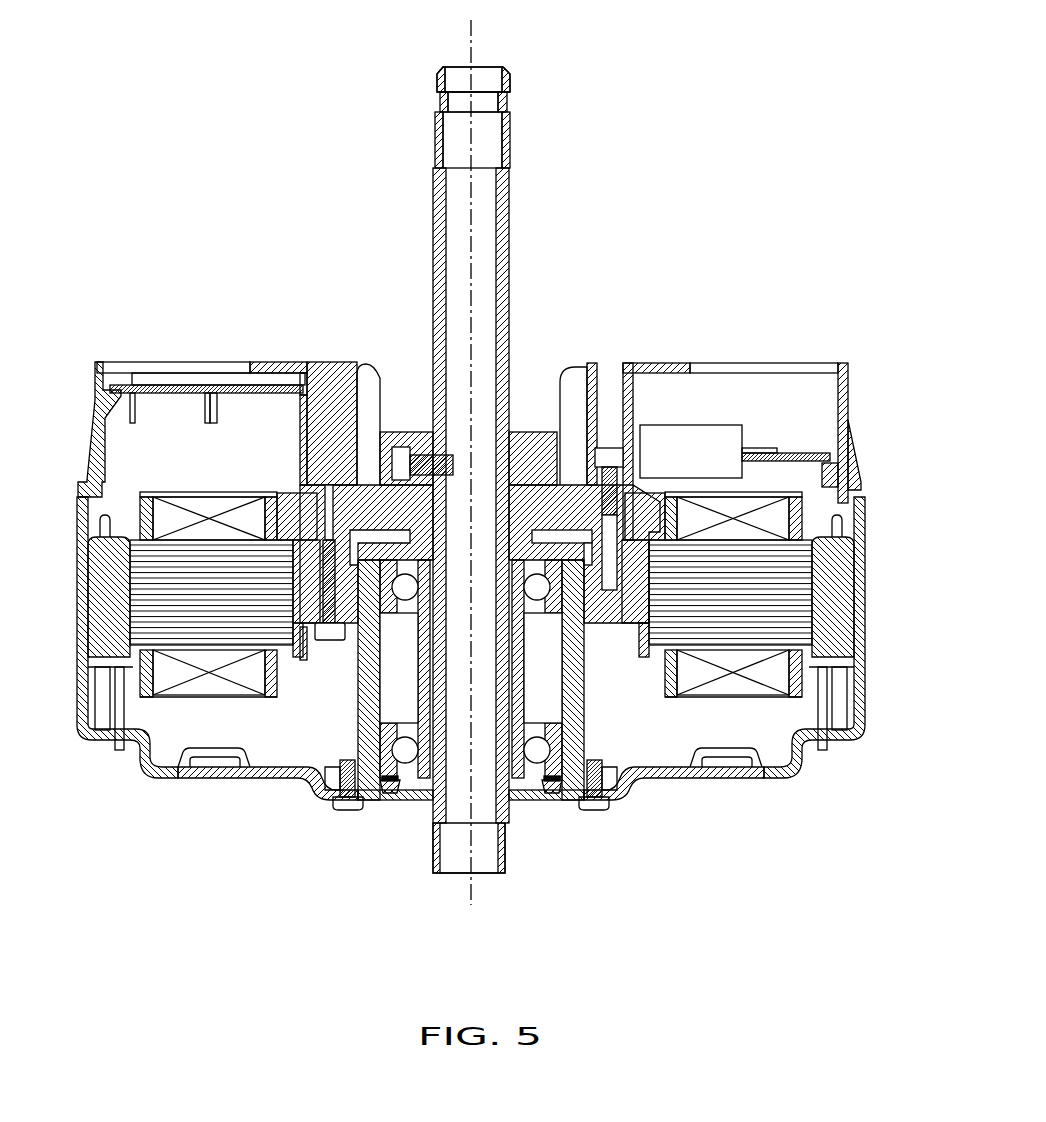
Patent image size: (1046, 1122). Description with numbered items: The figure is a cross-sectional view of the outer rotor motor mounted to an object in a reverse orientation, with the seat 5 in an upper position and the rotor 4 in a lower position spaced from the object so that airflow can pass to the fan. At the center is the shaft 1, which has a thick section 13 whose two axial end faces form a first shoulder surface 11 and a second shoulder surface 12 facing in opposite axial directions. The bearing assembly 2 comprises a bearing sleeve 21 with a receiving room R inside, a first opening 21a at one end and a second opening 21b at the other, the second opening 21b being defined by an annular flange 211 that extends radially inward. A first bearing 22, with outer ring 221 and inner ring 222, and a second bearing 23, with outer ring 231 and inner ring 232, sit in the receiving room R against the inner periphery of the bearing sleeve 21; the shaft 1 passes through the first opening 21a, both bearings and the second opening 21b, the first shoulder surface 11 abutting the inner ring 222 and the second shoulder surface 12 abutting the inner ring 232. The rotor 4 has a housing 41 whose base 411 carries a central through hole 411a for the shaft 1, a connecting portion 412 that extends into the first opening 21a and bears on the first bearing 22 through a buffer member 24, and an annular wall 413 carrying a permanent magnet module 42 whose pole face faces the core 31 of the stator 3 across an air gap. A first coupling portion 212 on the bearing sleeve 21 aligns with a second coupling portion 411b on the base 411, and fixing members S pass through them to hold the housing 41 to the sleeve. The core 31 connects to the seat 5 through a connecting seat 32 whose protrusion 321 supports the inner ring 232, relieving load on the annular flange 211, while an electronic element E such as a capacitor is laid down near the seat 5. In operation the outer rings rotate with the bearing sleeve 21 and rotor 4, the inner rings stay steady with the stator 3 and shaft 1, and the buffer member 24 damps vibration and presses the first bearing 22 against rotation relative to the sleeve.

The shaft 1 is at (508, 258).
The bearing assembly 2 is at (345, 672).
The stator 3 is at (230, 292).
The core 31 is at (172, 565).
The connecting seat 32 is at (300, 487).
The protrusion 321 is at (407, 545).
The rotor 4 is at (787, 877).
The housing 41 is at (692, 797).
The base 411 is at (226, 780).
The through hole 411a is at (528, 800).
The second coupling portion 411b is at (327, 795).
The connecting portion 412 is at (394, 815).
The annular wall 413 is at (857, 678).
The permanent magnet module 42 is at (837, 647).
The seat 5 is at (658, 362).
The electronic element E is at (720, 437).
The first shoulder surface 11 is at (415, 786).
The second shoulder surface 12 is at (415, 430).
The thick section 13 is at (510, 690).
The bearing sleeve 21 is at (577, 673).
The first opening 21a is at (383, 782).
The second opening 21b is at (397, 548).
The annular flange 211 is at (545, 548).
The first coupling portion 212 is at (612, 780).
The first bearing 22 is at (543, 797).
The outer ring 221 is at (585, 808).
The inner ring 222 is at (494, 788).
The second bearing 23 is at (607, 450).
The outer ring 231 is at (645, 427).
The inner ring 232 is at (493, 555).
The buffer member 24 is at (530, 805).
The receiving room R is at (386, 683).
The fixing members S is at (347, 808).